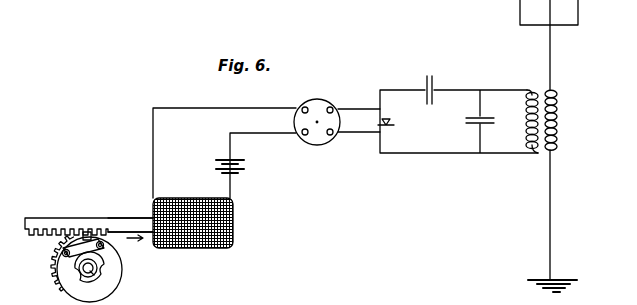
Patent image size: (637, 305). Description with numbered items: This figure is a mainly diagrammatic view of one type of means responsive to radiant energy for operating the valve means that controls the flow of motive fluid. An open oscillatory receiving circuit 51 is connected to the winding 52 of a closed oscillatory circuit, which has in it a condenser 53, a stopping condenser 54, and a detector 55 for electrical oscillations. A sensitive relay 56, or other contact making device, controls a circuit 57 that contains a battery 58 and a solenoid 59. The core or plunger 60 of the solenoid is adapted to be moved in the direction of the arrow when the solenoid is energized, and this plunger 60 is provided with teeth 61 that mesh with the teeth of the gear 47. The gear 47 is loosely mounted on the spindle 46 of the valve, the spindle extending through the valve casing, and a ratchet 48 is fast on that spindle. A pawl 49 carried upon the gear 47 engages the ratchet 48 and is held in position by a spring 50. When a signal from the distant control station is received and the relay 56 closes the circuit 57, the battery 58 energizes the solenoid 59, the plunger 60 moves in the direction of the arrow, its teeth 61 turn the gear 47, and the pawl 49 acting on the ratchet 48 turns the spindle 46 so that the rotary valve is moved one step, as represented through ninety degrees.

The spindle 46 is at (113, 284).
The gear 47 is at (52, 268).
The ratchet 48 is at (104, 260).
The pawl 49 is at (61, 250).
The spring 50 is at (87, 232).
The open oscillatory receiving circuit 51 is at (552, 181).
The winding 52 is at (540, 153).
The condenser 53 is at (477, 123).
The stopping condenser 54 is at (435, 92).
The detector 55 is at (458, 121).
The sensitive relay 56 is at (318, 132).
The circuit 57 is at (276, 133).
The battery 58 is at (233, 174).
The solenoid 59 is at (198, 240).
The core or plunger 60 is at (133, 222).
The teeth 61 is at (46, 232).